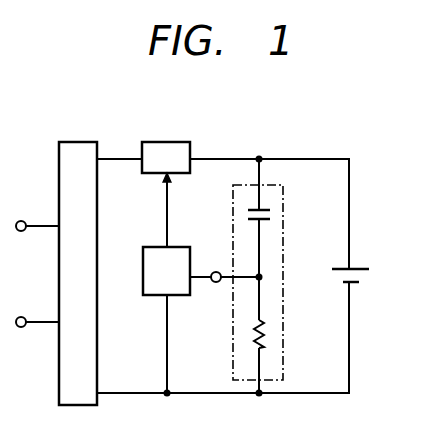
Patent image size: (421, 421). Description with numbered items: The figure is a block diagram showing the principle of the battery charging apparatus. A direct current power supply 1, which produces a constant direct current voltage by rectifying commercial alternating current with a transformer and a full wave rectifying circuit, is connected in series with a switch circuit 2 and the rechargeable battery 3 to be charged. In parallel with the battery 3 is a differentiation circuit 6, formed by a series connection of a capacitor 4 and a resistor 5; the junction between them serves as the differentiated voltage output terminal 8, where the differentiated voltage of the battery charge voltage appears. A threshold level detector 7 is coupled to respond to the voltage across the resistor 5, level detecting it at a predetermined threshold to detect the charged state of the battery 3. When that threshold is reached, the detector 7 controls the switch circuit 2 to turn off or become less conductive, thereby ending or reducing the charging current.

The direct current power supply 1 is at (60, 190).
The switch circuit 2 is at (166, 148).
The rechargeable battery 3 is at (360, 267).
The capacitor 4 is at (263, 222).
The resistor 5 is at (277, 335).
The differentiation circuit 6 is at (285, 277).
The threshold level detector 7 is at (143, 270).
The differentiated voltage output terminal 8 is at (217, 284).